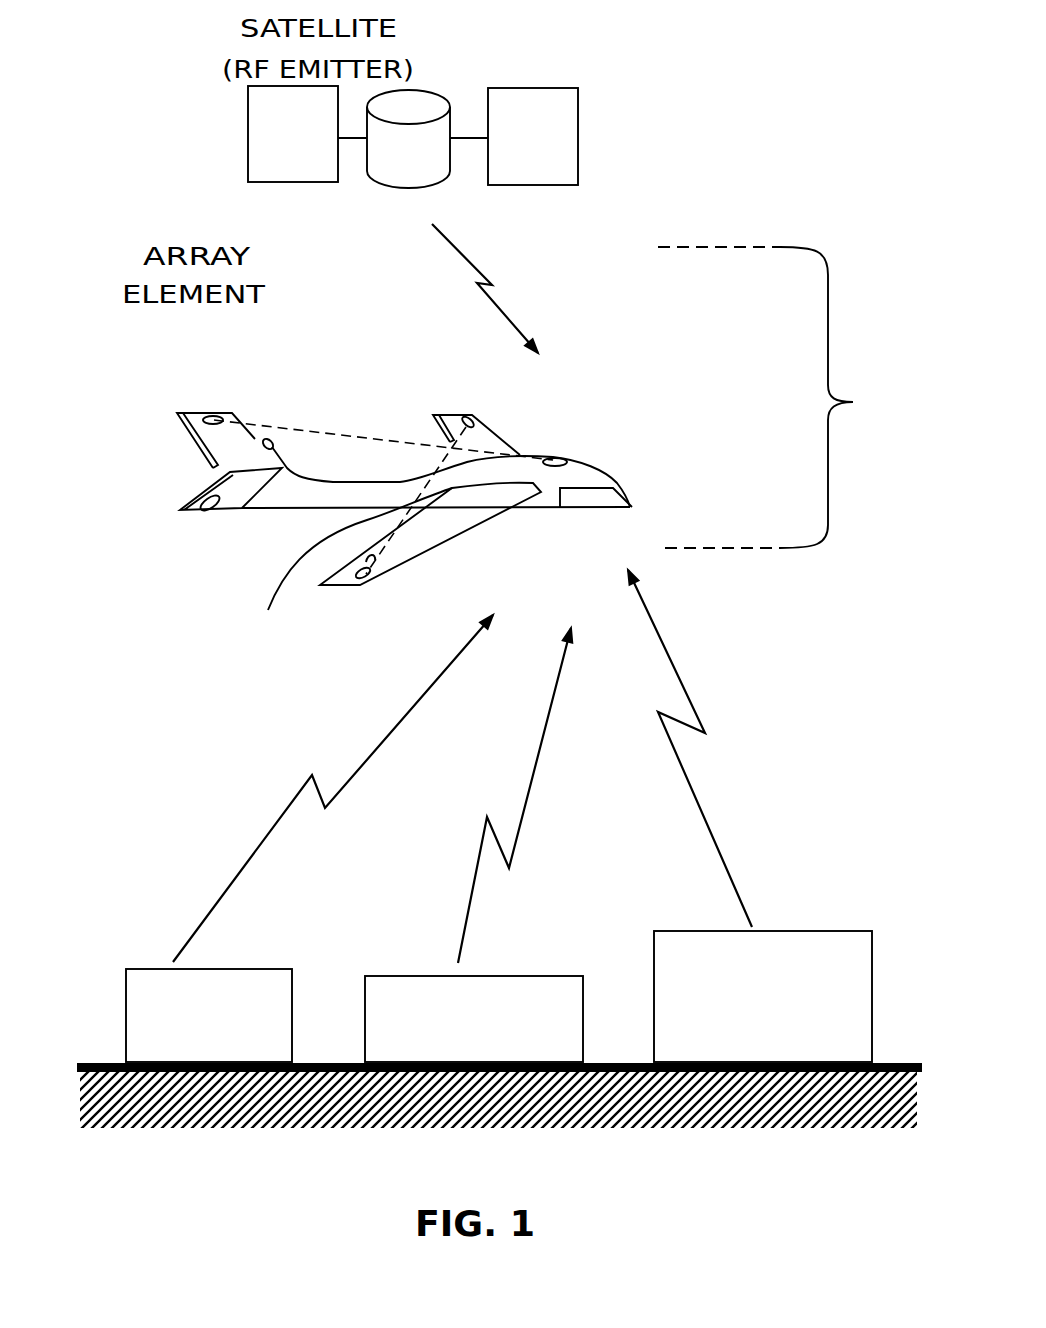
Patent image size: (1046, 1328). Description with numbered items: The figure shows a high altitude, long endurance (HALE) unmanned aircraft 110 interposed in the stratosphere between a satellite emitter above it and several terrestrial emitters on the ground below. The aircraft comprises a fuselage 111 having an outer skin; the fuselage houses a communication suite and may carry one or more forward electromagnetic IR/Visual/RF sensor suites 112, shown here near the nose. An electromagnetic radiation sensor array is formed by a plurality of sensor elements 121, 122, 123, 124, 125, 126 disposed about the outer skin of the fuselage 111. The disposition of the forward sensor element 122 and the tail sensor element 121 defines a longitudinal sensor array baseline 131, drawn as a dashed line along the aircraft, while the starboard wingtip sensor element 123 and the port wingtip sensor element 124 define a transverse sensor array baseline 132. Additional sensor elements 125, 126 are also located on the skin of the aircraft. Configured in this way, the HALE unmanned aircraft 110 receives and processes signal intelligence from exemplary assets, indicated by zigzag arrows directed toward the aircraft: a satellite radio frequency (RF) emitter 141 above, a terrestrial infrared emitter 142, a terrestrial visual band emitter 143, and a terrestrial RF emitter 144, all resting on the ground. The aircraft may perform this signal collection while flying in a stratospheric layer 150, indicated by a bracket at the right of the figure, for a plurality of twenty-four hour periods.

The high altitude, long endurance (HALE) unmanned aircraft 110 is at (183, 474).
The fuselage 111 is at (298, 508).
The forward electromagnetic sensor suite 112 is at (613, 498).
The tail sensor element 121 is at (216, 411).
The forward sensor element 122 is at (557, 457).
The starboard wingtip sensor element 123 is at (366, 577).
The port wingtip sensor element 124 is at (470, 415).
The sensor element 125 is at (204, 509).
The sensor element 126 is at (271, 442).
The longitudinal sensor array baseline 131 is at (347, 432).
The transverse sensor array baseline 132 is at (388, 575).
The satellite radio frequency (RF) emitter 141 is at (596, 107).
The terrestrial infrared emitter 142 is at (157, 968).
The terrestrial visual band emitter 143 is at (410, 973).
The terrestrial RF emitter 144 is at (670, 930).
The stratospheric layer 150 is at (853, 402).